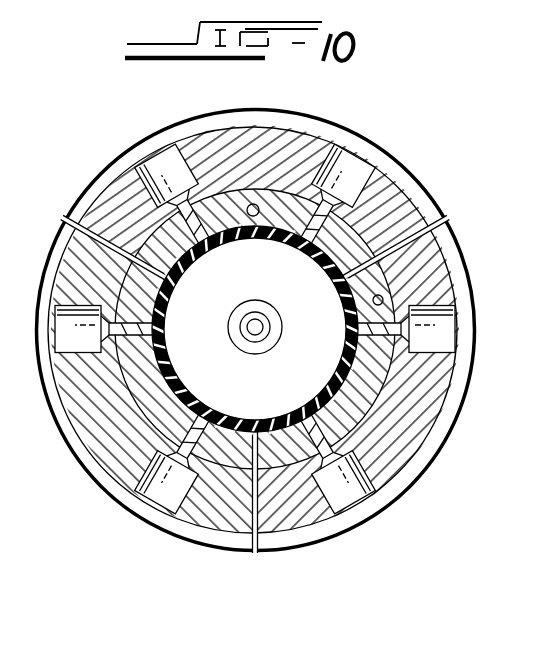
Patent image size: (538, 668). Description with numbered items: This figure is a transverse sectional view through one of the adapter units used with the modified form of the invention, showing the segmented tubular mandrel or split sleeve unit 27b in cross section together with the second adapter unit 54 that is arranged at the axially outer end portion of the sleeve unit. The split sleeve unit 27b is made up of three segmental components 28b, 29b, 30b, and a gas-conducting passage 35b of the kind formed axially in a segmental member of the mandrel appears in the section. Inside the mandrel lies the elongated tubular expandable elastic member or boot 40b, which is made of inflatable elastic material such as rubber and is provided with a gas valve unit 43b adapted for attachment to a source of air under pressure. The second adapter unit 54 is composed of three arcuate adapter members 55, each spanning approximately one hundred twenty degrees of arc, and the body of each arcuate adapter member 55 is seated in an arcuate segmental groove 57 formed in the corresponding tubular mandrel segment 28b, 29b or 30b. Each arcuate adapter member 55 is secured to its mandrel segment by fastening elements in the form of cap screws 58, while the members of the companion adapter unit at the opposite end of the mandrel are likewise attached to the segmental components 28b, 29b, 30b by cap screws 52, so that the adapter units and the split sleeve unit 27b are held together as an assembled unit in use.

The segmented tubular mandrel or split sleeve unit 27b is at (362, 405).
The segmental component of the segmented tubular mandrel 28b is at (255, 329).
The segmental component of the segmented tubular mandrel 29b is at (400, 290).
The segmental component of the segmented tubular mandrel 30b is at (230, 450).
The gas-conducting passage 35b is at (229, 185).
The expandable elastic member or boot 40b is at (255, 311).
The gas valve unit 43b is at (255, 329).
The cap screws 52 is at (537, 343).
The second adapter unit 54 is at (410, 163).
The arcuate adapter members 55 is at (317, 143).
The arcuate segmental groove 57 is at (282, 126).
The cap screws 58 is at (163, 163).